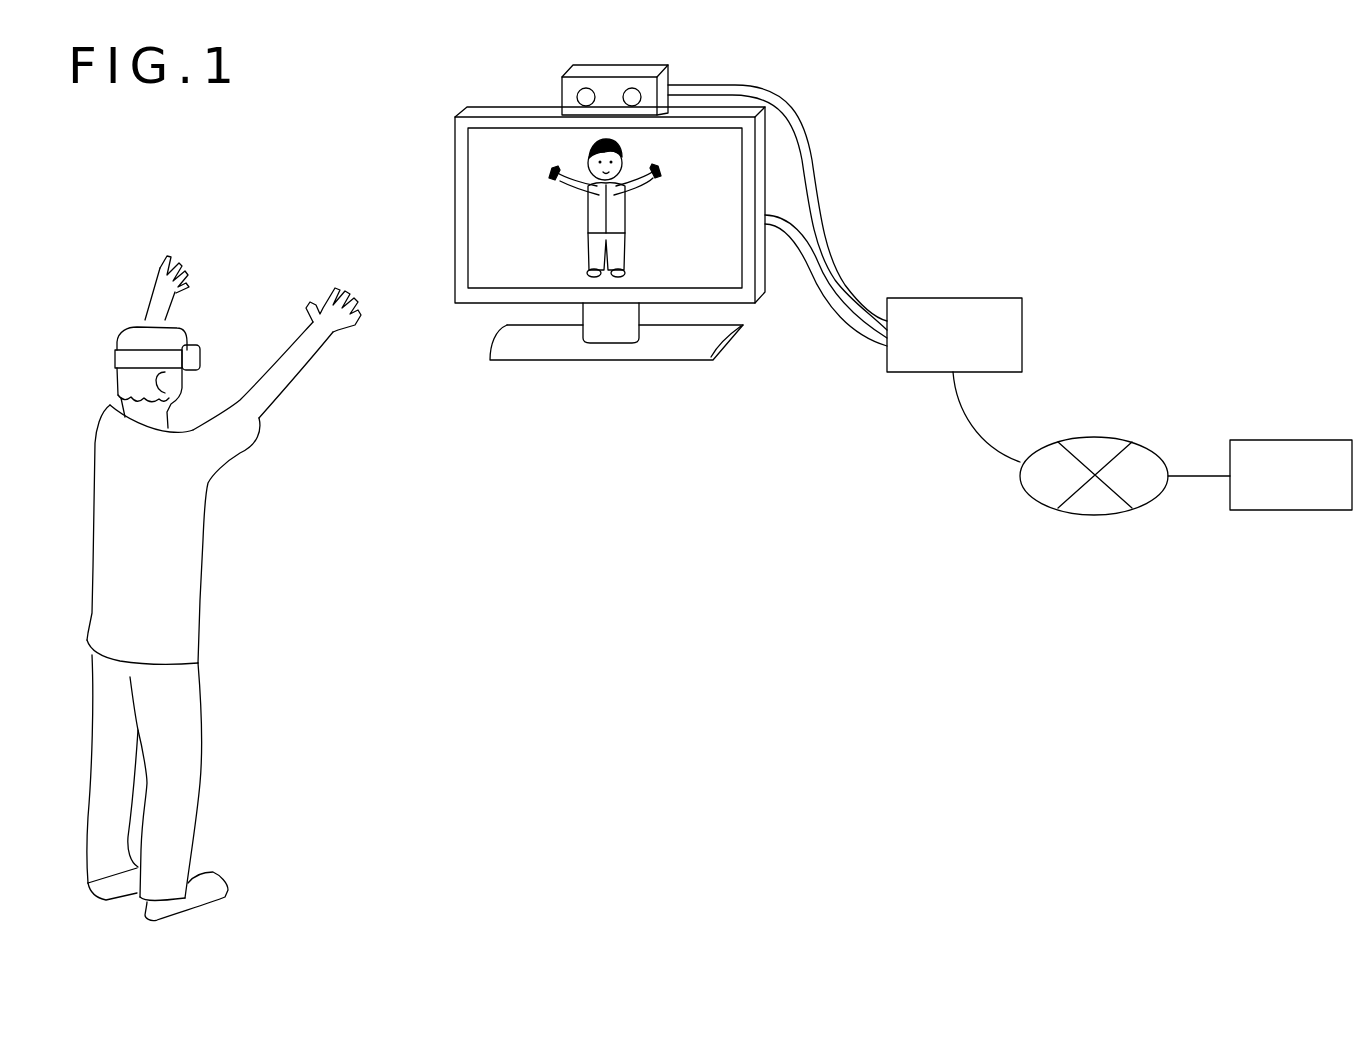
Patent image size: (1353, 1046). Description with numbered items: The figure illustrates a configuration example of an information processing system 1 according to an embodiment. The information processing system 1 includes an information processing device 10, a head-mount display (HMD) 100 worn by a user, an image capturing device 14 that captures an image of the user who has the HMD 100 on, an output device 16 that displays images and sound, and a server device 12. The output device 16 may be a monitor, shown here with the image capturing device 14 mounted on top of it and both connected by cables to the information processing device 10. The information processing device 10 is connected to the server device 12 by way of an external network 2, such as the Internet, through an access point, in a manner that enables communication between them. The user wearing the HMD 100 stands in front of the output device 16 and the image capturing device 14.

The information processing system 1 is at (692, 508).
The external network 2 is at (1092, 435).
The information processing device 10 is at (952, 298).
The server device 12 is at (1298, 437).
The image capturing device 14 is at (561, 95).
The output device 16 is at (455, 207).
The head-mount display 100 is at (117, 357).